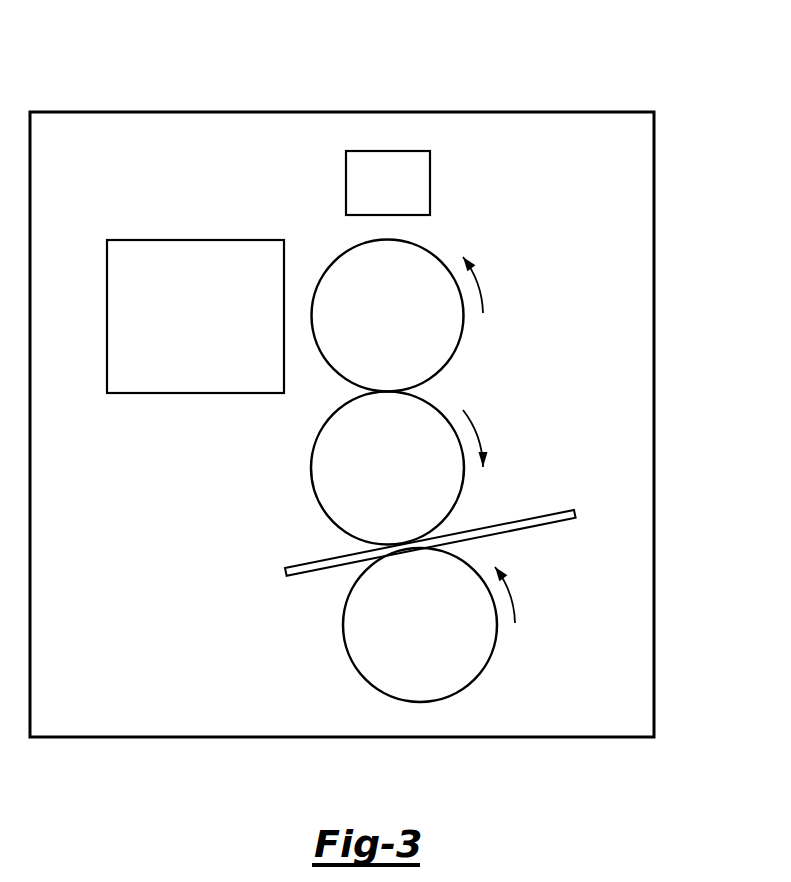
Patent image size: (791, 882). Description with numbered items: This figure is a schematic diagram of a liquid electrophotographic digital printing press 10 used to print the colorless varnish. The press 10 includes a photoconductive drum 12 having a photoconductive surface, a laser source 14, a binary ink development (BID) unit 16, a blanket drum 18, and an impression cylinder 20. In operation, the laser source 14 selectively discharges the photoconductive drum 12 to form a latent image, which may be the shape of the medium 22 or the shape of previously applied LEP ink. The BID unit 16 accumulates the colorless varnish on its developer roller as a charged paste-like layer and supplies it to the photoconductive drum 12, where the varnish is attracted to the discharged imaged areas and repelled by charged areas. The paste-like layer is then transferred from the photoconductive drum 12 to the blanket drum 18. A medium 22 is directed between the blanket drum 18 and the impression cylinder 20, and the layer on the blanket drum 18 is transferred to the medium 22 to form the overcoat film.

The LEP digital printing press 10 is at (647, 72).
The photoconductive drum 12 is at (375, 324).
The laser source 14 is at (375, 196).
The binary ink development (BID) unit 16 is at (183, 324).
The blanket drum 18 is at (375, 476).
The impression cylinder 20 is at (408, 634).
The medium 22 is at (519, 516).